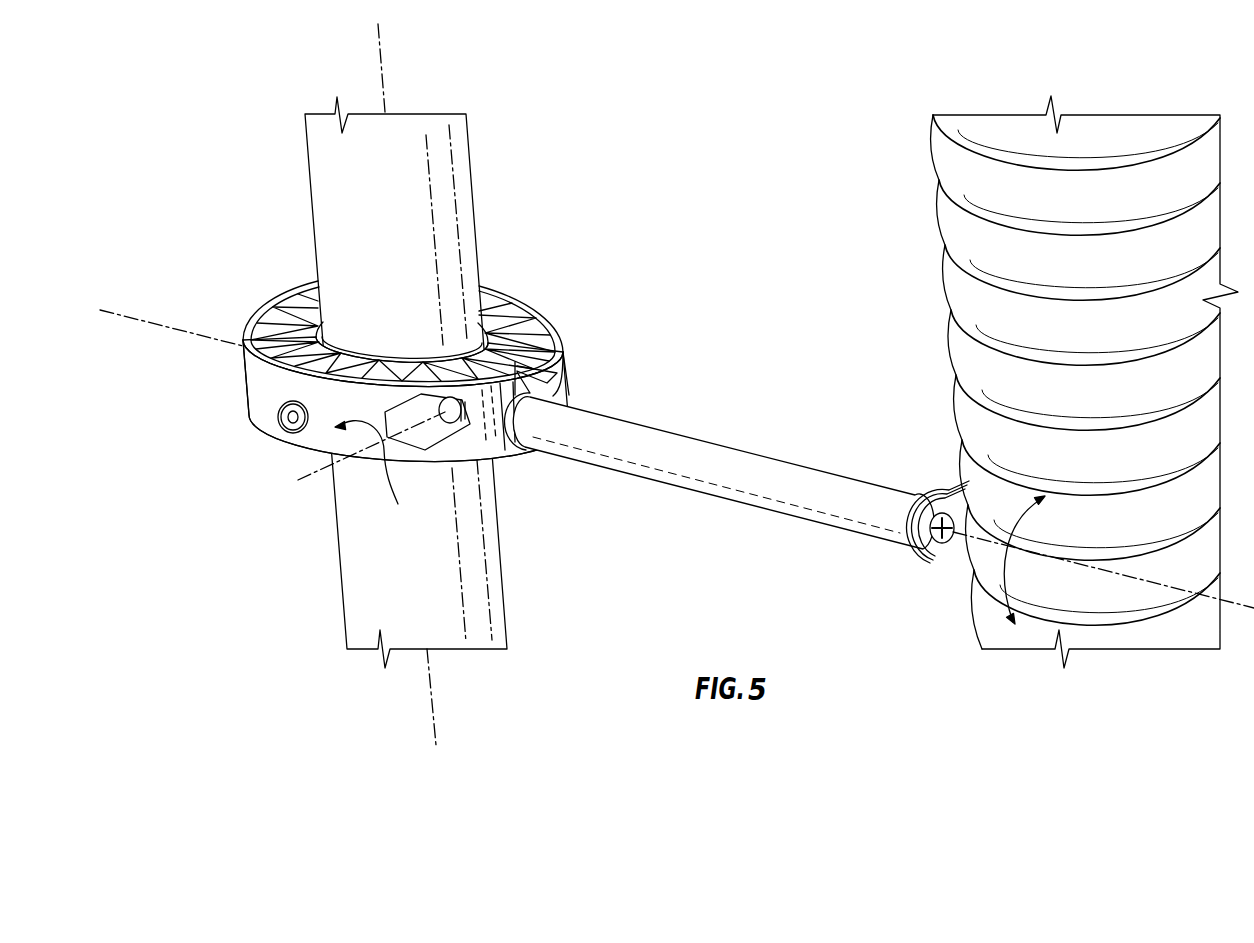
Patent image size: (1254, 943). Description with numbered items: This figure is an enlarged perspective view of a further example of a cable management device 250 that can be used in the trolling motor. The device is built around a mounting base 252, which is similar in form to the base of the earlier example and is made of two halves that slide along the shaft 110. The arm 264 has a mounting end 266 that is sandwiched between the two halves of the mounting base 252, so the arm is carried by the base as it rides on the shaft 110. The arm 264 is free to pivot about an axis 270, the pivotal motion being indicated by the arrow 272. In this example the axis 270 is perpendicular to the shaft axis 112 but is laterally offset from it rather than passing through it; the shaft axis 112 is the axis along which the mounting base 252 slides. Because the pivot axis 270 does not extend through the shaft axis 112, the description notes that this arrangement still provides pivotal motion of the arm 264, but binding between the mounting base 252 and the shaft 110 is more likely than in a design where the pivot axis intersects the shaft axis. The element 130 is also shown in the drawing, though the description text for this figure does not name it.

The shaft 110 is at (466, 198).
The shaft axis 112 is at (383, 64).
The auger 130 is at (1097, 140).
The cable management device 250 is at (214, 398).
The mounting base 252 is at (287, 332).
The arm 264 is at (868, 512).
The mounting end 266 is at (560, 370).
The axis 270 is at (315, 473).
The arrow 272 is at (402, 468).